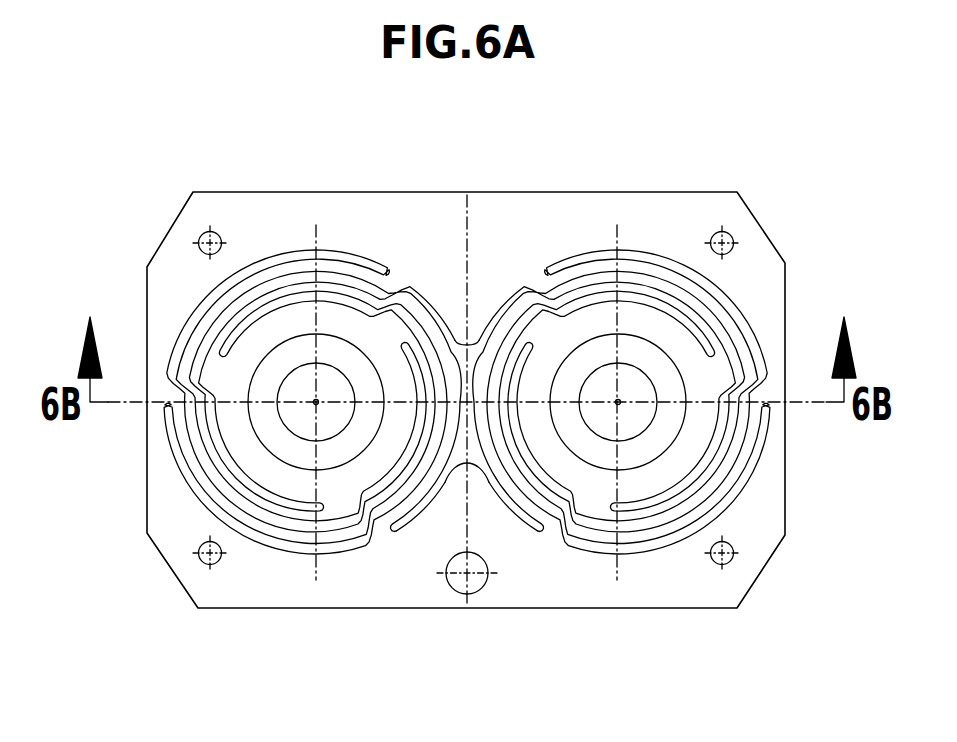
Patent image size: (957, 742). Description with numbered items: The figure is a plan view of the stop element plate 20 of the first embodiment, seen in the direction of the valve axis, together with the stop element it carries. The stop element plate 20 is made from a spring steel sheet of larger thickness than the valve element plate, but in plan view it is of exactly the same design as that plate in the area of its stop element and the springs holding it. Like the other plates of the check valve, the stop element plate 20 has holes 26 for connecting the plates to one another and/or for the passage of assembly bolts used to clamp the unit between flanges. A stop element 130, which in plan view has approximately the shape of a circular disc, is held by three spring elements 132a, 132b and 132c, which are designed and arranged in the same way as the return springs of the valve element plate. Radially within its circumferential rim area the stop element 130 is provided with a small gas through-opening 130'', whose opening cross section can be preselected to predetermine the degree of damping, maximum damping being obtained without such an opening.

The stop element plate 20 is at (550, 230).
The holes 26 is at (723, 232).
The stop element 130 is at (253, 404).
The gas through-opening 130'' is at (366, 540).
The spring element 132a is at (200, 477).
The spring element 132b is at (440, 333).
The spring element 132c is at (237, 288).